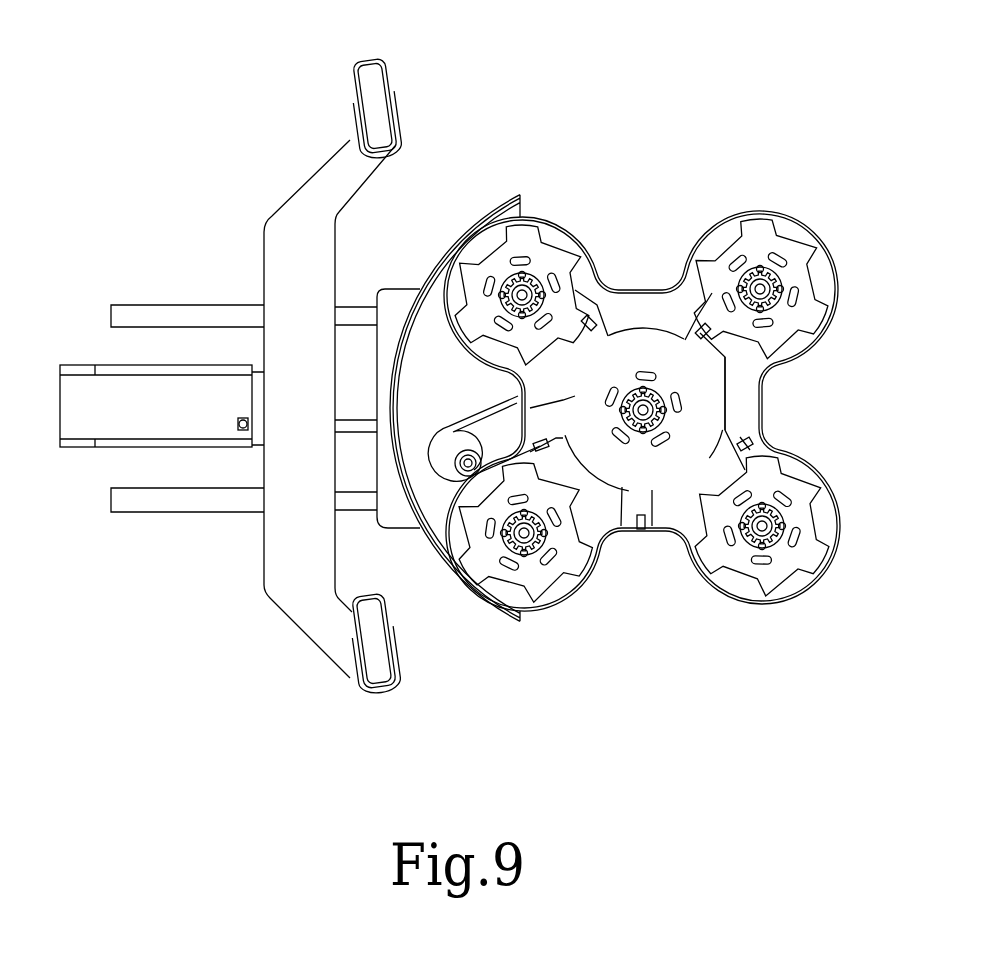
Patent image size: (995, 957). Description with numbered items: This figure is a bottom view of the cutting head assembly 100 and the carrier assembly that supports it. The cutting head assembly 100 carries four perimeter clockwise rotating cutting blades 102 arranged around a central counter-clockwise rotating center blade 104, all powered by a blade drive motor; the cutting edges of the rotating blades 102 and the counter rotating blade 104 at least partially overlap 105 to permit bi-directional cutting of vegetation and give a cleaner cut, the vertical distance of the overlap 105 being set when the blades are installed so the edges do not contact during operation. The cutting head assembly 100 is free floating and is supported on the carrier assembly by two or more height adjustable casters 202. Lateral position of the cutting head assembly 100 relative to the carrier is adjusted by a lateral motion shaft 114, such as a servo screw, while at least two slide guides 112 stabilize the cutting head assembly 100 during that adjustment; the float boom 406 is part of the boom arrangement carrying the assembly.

The cutting head assembly 100 is at (684, 156).
The rotating cutting blades 102 is at (547, 271).
The counter rotating center blade 104 is at (666, 367).
The overlap 105 is at (742, 440).
The slide guides 112 is at (137, 315).
The lateral motion shaft 114 is at (353, 420).
The height adjustable casters 202 is at (373, 80).
The float boom 406 is at (95, 425).